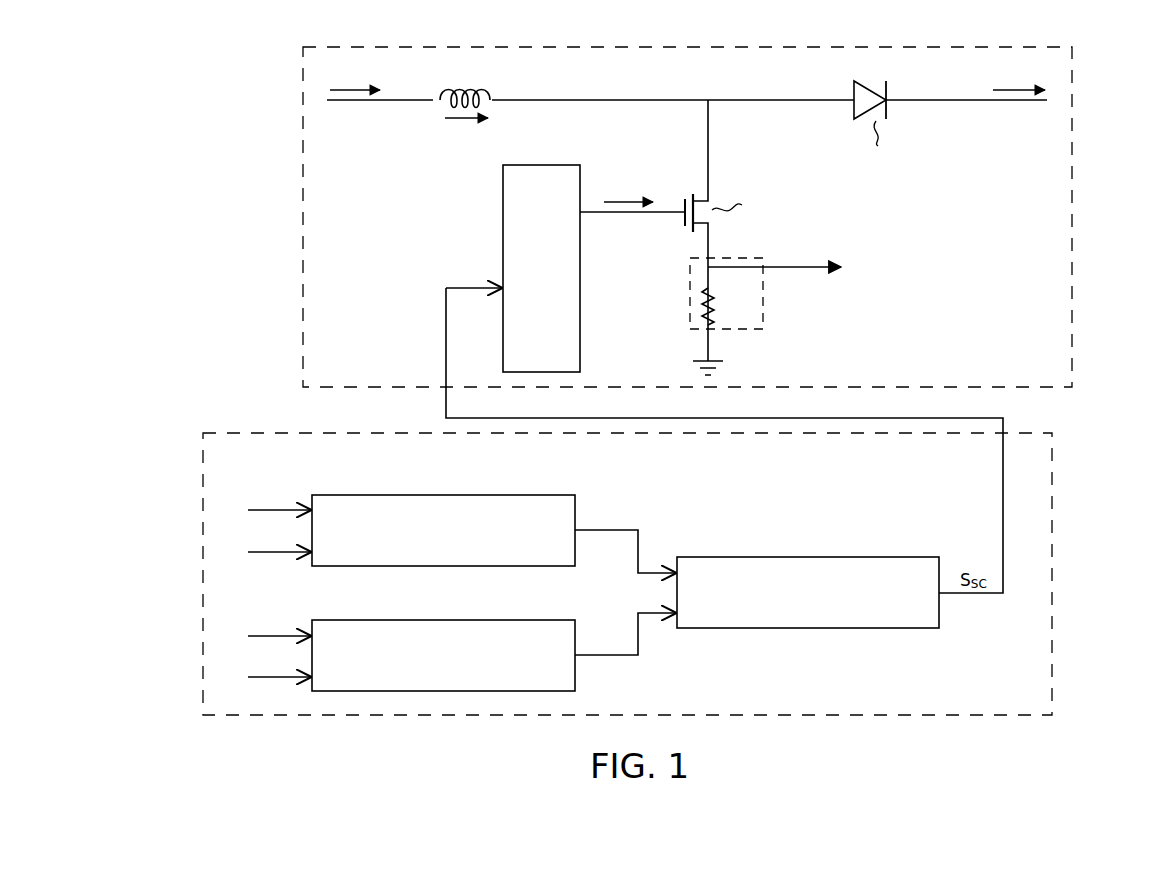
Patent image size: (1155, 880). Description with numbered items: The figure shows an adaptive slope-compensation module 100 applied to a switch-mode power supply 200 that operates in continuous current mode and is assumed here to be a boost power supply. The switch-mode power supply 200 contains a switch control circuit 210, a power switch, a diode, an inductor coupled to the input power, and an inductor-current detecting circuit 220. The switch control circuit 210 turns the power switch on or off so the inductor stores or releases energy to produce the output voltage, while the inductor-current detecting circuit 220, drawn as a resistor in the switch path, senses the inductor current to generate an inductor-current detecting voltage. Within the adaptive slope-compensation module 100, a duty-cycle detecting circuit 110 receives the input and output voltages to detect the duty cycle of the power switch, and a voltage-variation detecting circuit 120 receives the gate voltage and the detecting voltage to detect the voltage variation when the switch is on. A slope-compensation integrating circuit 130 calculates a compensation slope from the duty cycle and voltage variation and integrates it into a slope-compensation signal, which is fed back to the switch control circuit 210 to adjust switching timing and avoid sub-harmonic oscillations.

The adaptive slope-compensation module 100 is at (1052, 470).
The duty-cycle detecting circuit 110 is at (500, 620).
The voltage-variation detecting circuit 120 is at (500, 495).
The slope-compensation integrating circuit 130 is at (865, 557).
The switch-mode power supply 200 is at (1072, 116).
The switch control circuit 210 is at (540, 165).
The inductor-current detecting circuit 220 is at (765, 305).